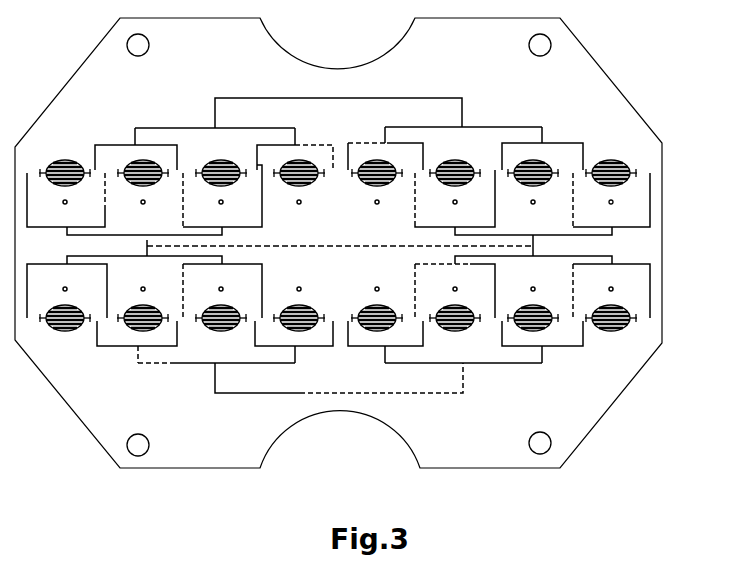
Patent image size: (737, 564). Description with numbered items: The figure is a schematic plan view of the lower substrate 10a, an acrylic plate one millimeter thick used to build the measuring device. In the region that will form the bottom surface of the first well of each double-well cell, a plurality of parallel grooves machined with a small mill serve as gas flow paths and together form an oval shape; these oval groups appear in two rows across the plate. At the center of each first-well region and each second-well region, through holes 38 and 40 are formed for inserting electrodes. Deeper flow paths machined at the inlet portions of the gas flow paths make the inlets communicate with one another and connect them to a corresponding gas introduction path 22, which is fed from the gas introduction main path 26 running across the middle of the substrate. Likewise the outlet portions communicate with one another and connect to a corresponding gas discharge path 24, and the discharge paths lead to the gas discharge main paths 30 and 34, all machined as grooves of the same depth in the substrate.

The lower substrate 10a is at (580, 424).
The gas introduction path 22 is at (662, 167).
The gas discharge path 24 is at (568, 346).
The gas introduction main path 26 is at (378, 246).
The gas discharge main path 30 is at (432, 393).
The gas discharge main path 34 is at (415, 98).
The through hole 38 is at (613, 203).
The through hole 40 is at (614, 160).